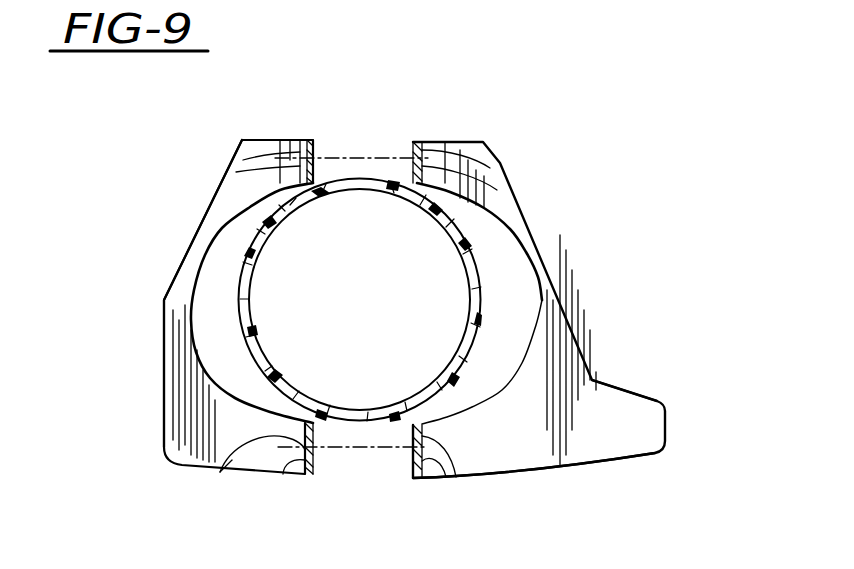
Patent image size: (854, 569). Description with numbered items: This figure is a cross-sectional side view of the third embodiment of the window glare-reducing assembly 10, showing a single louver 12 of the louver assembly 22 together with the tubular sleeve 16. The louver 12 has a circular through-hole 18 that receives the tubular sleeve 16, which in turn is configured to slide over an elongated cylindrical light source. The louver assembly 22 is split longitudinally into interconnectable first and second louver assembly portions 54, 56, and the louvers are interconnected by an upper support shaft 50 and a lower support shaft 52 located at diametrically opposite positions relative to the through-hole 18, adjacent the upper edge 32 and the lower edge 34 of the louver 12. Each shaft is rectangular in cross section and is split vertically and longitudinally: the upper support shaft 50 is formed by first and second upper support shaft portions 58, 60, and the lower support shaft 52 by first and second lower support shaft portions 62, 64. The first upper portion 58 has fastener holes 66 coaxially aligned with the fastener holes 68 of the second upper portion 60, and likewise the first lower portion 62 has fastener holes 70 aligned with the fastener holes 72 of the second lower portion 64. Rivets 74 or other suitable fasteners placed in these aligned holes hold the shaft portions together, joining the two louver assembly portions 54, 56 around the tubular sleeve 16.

The window glare-reducing assembly 10 is at (563, 137).
The louver 12 is at (648, 385).
The tubular sleeve 16 is at (478, 328).
The circular through-hole 18 is at (538, 284).
The louver assembly 22 is at (152, 305).
The upper edge 32 is at (273, 140).
The lower edge 34 is at (543, 472).
The upper support shaft 50 is at (414, 139).
The lower support shaft 52 is at (396, 481).
The first louver assembly portion 54 is at (237, 136).
The second louver assembly portion 56 is at (484, 137).
The first upper support shaft portion 58 is at (300, 160).
The second upper support shaft portion 60 is at (430, 160).
The first lower support shaft portion 62 is at (290, 465).
The second lower support shaft portion 64 is at (438, 442).
The fastener hole 66 is at (300, 178).
The fastener hole 68 is at (495, 192).
The fastener hole 70 is at (258, 450).
The fastener hole 72 is at (430, 467).
The rivet 74 is at (222, 472).